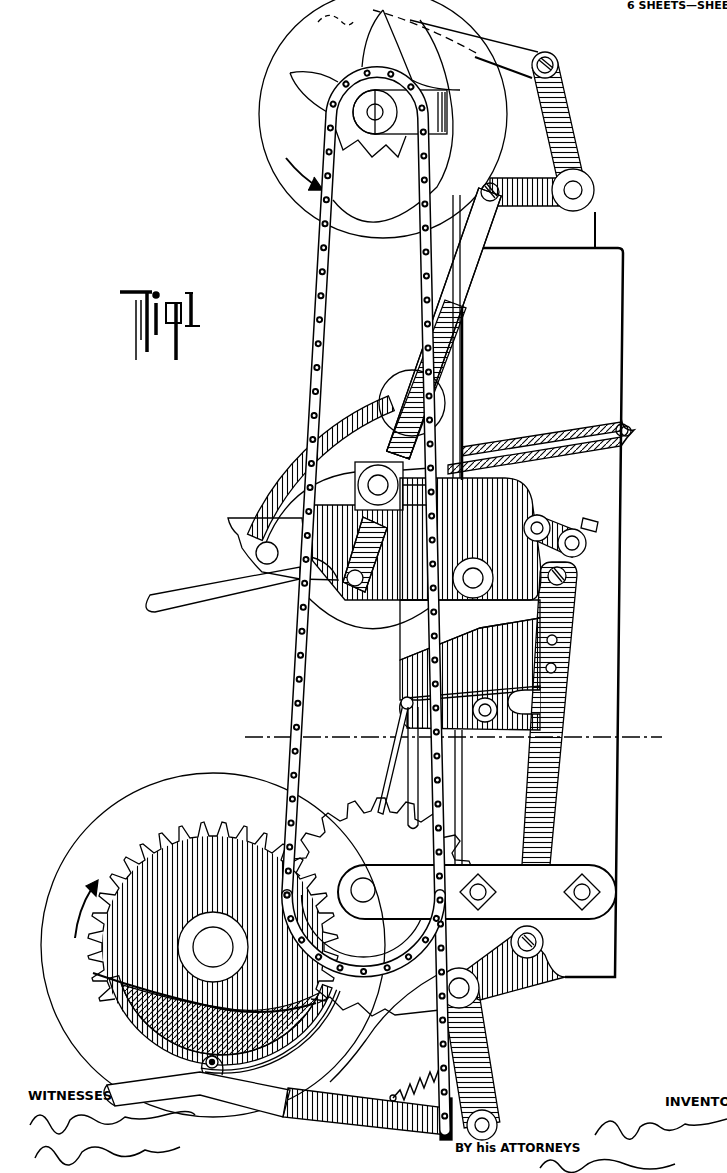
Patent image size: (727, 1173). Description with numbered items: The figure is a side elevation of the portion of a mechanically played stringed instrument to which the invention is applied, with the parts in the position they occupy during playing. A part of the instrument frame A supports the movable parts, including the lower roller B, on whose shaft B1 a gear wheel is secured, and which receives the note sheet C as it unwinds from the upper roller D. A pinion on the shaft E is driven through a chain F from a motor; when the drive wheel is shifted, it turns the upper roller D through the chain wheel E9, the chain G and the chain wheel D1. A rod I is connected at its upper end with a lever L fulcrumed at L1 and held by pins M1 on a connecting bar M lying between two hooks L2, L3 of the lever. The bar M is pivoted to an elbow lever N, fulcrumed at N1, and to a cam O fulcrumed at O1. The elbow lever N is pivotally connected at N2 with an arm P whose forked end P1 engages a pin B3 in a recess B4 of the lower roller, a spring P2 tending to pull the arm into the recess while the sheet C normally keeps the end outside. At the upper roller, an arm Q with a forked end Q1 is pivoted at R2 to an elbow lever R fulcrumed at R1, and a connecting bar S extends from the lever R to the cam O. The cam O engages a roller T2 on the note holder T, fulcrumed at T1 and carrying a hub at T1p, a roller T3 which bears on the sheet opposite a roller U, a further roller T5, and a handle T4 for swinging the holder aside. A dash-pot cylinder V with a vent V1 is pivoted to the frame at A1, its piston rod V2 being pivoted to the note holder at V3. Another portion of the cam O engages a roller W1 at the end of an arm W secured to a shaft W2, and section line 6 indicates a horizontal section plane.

The instrument frame A is at (542, 594).
The pivot on frame A1 is at (638, 433).
The lower roller B is at (186, 790).
The shaft of lower roller B1 is at (100, 995).
The pin B3 is at (205, 1076).
The recess B4 is at (150, 1058).
The note sheet C is at (468, 372).
The upper roller D is at (383, 119).
The chain wheel D1 is at (393, 121).
The shaft E is at (376, 890).
The chain wheel E9 is at (380, 940).
The chain F is at (436, 1136).
The chain G is at (420, 254).
The rod I is at (395, 766).
The lever L is at (494, 686).
The fulcrum of lever L L1 is at (505, 740).
The projection or hook L2 is at (498, 645).
The projection or hook L3 is at (566, 722).
The connecting bar M is at (566, 778).
The pins M1 is at (572, 660).
The elbow lever N is at (540, 962).
The fulcrum of elbow lever N N1 is at (482, 1000).
The pivot N2 is at (500, 1112).
The cam O is at (470, 535).
The fulcrum of cam O1 is at (472, 633).
The arm P is at (338, 1120).
The forked end P1 is at (262, 1098).
The spring P2 is at (426, 1056).
The arm Q is at (520, 48).
The forked end Q1 is at (340, 34).
The elbow lever R is at (582, 124).
The fulcrum of elbow lever R R1 is at (585, 190).
The pivot R2 is at (560, 60).
The connecting bar S is at (444, 321).
The note holder T is at (290, 470).
The fulcrum of note holder T1 is at (266, 568).
The hub T1p is at (355, 486).
The roller T2 is at (400, 460).
The roller T3 is at (410, 396).
The handle T4 is at (215, 580).
The roller T5 is at (372, 632).
The roller U is at (450, 405).
The cylinder V is at (552, 430).
The vent V1 is at (622, 420).
The piston rod V2 is at (520, 434).
The pivot on note holder V3 is at (470, 444).
The arm W is at (545, 510).
The roller W1 is at (580, 528).
The shaft W2 is at (592, 548).
The section line 6 is at (445, 736).